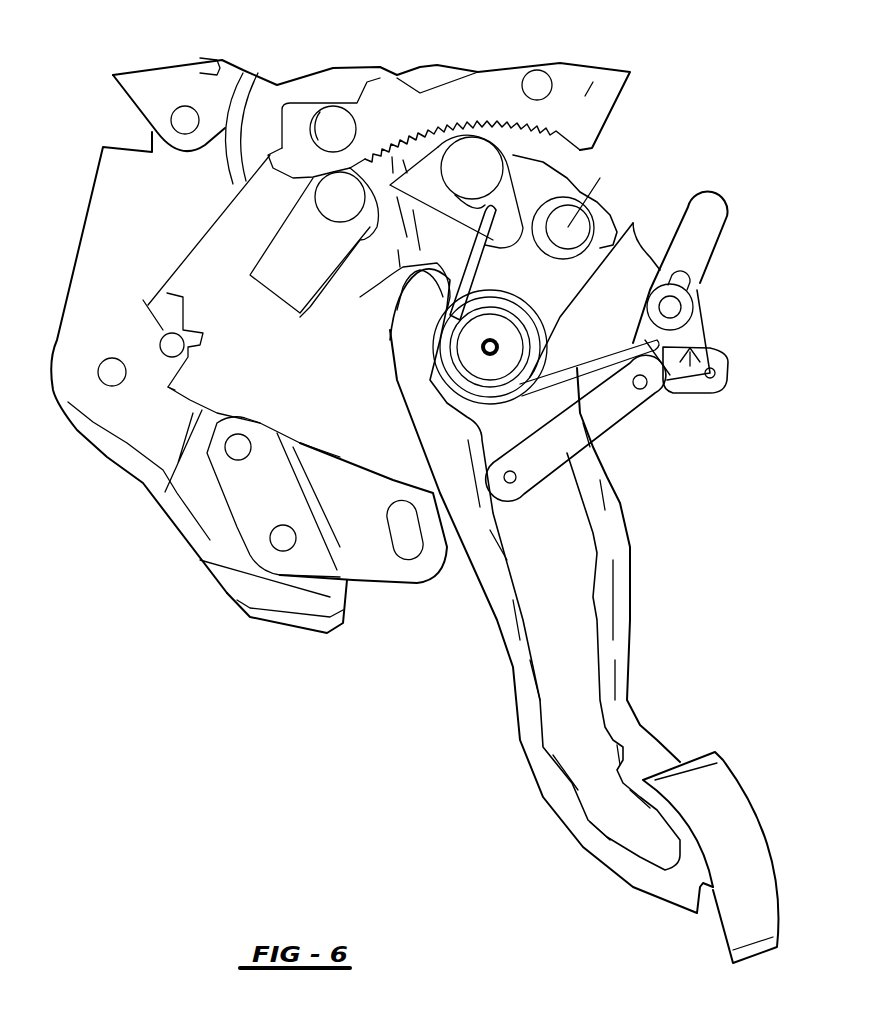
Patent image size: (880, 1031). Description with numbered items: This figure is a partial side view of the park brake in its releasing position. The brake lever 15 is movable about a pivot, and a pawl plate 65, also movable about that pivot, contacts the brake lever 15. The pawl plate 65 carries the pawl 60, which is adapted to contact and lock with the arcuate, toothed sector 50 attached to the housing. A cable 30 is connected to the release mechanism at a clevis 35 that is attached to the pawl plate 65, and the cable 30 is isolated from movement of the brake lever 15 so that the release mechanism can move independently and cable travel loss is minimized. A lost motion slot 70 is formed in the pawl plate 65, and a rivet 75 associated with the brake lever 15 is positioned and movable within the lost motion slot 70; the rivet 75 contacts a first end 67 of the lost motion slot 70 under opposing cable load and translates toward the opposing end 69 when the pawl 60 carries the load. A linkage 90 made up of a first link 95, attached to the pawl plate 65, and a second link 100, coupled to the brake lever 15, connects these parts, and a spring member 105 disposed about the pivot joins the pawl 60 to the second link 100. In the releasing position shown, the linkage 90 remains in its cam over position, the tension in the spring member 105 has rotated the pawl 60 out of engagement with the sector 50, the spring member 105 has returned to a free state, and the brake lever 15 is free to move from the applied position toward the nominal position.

The brake lever 15 is at (623, 613).
The cable 30 is at (248, 312).
The clevis 35 is at (287, 270).
The sector 50 is at (587, 97).
The pawl 60 is at (428, 188).
The pawl plate 65 is at (368, 290).
The first end of the lost motion slot 67 is at (633, 223).
The opposing end of the lost motion slot 69 is at (507, 195).
The lost motion slot 70 is at (593, 202).
The rivet 75 is at (600, 178).
The linkage 90 is at (715, 278).
The first link 95 is at (627, 407).
The second link 100 is at (707, 220).
The spring member 105 is at (617, 483).